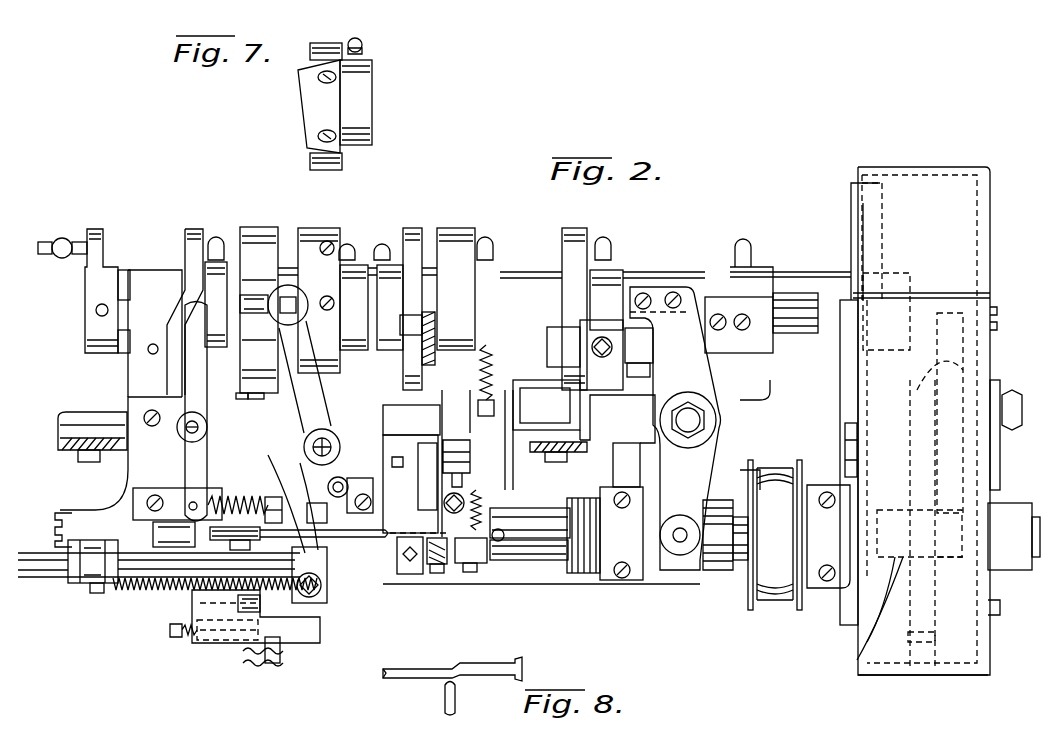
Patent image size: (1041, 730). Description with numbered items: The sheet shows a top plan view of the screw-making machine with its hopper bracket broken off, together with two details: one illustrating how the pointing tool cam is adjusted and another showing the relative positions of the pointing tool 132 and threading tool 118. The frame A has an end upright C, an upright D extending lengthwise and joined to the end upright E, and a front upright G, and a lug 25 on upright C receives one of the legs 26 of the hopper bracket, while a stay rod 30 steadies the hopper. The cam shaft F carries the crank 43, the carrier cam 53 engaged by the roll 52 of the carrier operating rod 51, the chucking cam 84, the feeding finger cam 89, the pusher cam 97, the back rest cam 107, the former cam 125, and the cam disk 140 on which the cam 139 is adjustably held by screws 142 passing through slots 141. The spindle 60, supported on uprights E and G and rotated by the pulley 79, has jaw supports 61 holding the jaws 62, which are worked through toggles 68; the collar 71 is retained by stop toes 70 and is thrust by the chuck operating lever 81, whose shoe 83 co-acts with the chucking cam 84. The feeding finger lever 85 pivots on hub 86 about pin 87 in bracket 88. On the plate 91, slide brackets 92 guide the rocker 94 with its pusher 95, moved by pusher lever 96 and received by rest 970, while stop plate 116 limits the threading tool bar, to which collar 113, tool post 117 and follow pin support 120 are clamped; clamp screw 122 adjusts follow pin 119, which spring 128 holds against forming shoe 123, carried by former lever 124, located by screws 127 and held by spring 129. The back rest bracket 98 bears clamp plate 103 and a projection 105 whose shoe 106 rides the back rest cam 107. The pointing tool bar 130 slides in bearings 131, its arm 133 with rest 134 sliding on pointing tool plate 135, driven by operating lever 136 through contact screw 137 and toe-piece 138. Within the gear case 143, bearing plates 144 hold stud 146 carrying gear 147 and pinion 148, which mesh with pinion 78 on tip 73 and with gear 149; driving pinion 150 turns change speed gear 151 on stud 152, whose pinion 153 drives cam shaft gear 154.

In FIG. 7, the cam disk 140 is at (327, 48).
In FIG. 2, the cam disk 140 is at (332, 342).
In FIG. 7, the cam 139 is at (298, 78).
In FIG. 2, the cam 139 is at (326, 228).
In FIG. 7, the slots 141 is at (320, 133).
In FIG. 7, the screws 142 is at (318, 148).
In FIG. 8, the pointing tool 132 is at (420, 676).
In FIG. 2, the pointing tool 132 is at (433, 533).
In FIG. 8, the threading tool 118 is at (456, 700).
In FIG. 2, the crank 43 is at (87, 270).
In FIG. 2, the cam shaft F is at (85, 316).
In FIG. 2, the end upright C is at (145, 375).
In FIG. 2, the stay rod 30 is at (153, 343).
In FIG. 2, the pusher cam 97 is at (193, 228).
In FIG. 2, the pusher lever 96 is at (207, 412).
In FIG. 2, the former cam 125 is at (258, 226).
In FIG. 2, the former lever 124 is at (253, 398).
In FIG. 2, the spring 129 is at (240, 399).
In FIG. 2, the toe-piece 138 is at (297, 285).
In FIG. 2, the pointing tool operating lever 136 is at (325, 383).
In FIG. 2, the pointing tool plate 135 is at (337, 460).
In FIG. 2, the rest 134 is at (340, 480).
In FIG. 2, the pusher 95 is at (283, 477).
In FIG. 2, the adjusting contact screw 137 is at (265, 503).
In FIG. 2, the lug 25 is at (75, 413).
In FIG. 2, the legs 26 is at (62, 452).
In FIG. 2, the plate 91 is at (132, 474).
In FIG. 2, the slide brackets 92 is at (168, 495).
In FIG. 2, the rocker 94 is at (163, 535).
In FIG. 2, the stop plate 116 is at (58, 535).
In FIG. 2, the pointing tool bar 130 is at (48, 578).
In FIG. 2, the bearings 131 is at (78, 586).
In FIG. 2, the follow pin support 120 is at (322, 634).
In FIG. 2, the clamp screw 122 is at (238, 600).
In FIG. 2, the screws 127 is at (178, 640).
In FIG. 2, the forming shoe 123 is at (241, 636).
In FIG. 2, the spring 128 is at (256, 666).
In FIG. 2, the follow pin 119 is at (281, 646).
In FIG. 2, the pointing tool arm 133 is at (324, 590).
In FIG. 2, the rest 970 is at (375, 523).
In FIG. 2, the tool post 117 is at (440, 574).
In FIG. 2, the clamp plate 103 is at (460, 565).
In FIG. 2, the collar 113 is at (500, 582).
In FIG. 2, the jaws 62 is at (530, 532).
In FIG. 2, the jaw supports 61 is at (540, 562).
In FIG. 2, the toggles 68 is at (563, 543).
In FIG. 2, the feeding finger lever 85 is at (507, 420).
In FIG. 2, the bracket 88 is at (617, 419).
In FIG. 2, the upright G is at (613, 460).
In FIG. 2, the projection 105 is at (452, 424).
In FIG. 2, the back rest bracket 98 is at (423, 468).
In FIG. 2, the shoe 106 is at (490, 380).
In FIG. 2, the roll 52 is at (408, 338).
In FIG. 2, the carrier operating rod 51 is at (431, 318).
In FIG. 2, the carrier cam 53 is at (413, 228).
In FIG. 2, the back rest cam 107 is at (458, 228).
In FIG. 2, the hub 86 is at (553, 335).
In FIG. 2, the feeding finger cam 89 is at (588, 240).
In FIG. 2, the pin 87 is at (640, 346).
In FIG. 2, the chuck operating lever 81 is at (707, 383).
In FIG. 2, the spindle 60 is at (676, 556).
In FIG. 2, the frame A is at (655, 584).
In FIG. 2, the collar 71 is at (705, 571).
In FIG. 2, the stop toes 70 is at (748, 532).
In FIG. 2, the pulley 79 is at (776, 600).
In FIG. 2, the shoe 83 is at (703, 292).
In FIG. 2, the chucking cam 84 is at (750, 335).
In FIG. 2, the end upright E is at (808, 450).
In FIG. 2, the upright D is at (776, 415).
In FIG. 2, the cam shaft gear 154 is at (851, 217).
In FIG. 2, the cam shaft change speed gear 151 is at (870, 505).
In FIG. 2, the cam shaft change speed gear stud 152 is at (853, 495).
In FIG. 2, the cam shaft change speed pinion 153 is at (843, 432).
In FIG. 2, the pinion 148 is at (905, 352).
In FIG. 2, the chasing cam change speed gear 147 is at (949, 313).
In FIG. 2, the bearing stud 146 is at (950, 392).
In FIG. 2, the bearing plates 144 is at (972, 460).
In FIG. 2, the pinion 78 is at (950, 560).
In FIG. 2, the driving pinion 150 is at (865, 642).
In FIG. 2, the tip 73 is at (857, 660).
In FIG. 2, the gear case 143 is at (928, 676).
In FIG. 2, the chasing cam shaft gear 149 is at (935, 642).